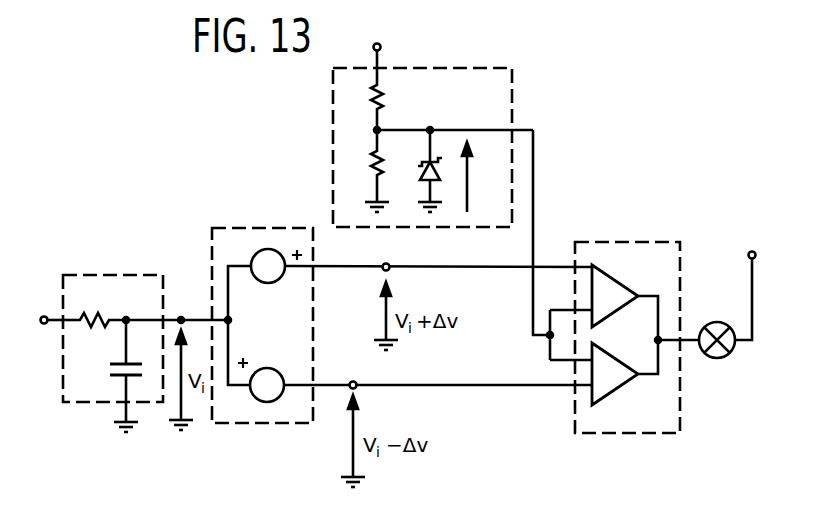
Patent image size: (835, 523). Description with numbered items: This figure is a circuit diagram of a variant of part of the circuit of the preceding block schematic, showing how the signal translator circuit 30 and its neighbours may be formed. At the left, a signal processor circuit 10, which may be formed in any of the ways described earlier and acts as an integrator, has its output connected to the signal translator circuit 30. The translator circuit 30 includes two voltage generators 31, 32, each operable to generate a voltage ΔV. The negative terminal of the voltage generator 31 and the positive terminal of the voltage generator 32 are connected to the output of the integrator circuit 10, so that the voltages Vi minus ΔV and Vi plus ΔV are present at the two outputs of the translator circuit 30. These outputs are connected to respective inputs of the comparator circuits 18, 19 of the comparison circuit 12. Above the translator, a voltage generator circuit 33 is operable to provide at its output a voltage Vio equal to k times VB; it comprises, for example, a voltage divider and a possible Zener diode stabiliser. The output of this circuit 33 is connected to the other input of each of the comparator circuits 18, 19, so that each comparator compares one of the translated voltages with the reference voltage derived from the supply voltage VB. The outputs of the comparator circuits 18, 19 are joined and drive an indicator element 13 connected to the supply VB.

The signal processor circuit 10 is at (72, 403).
The comparison circuit 12 is at (651, 326).
The indicator lamp 13 is at (716, 360).
The comparator circuit 18 is at (605, 292).
The comparator circuit 19 is at (608, 380).
The signal translator circuit 30 is at (262, 334).
The voltage generator 31 is at (268, 249).
The voltage generator 32 is at (268, 368).
The voltage generator circuit 33 is at (333, 98).